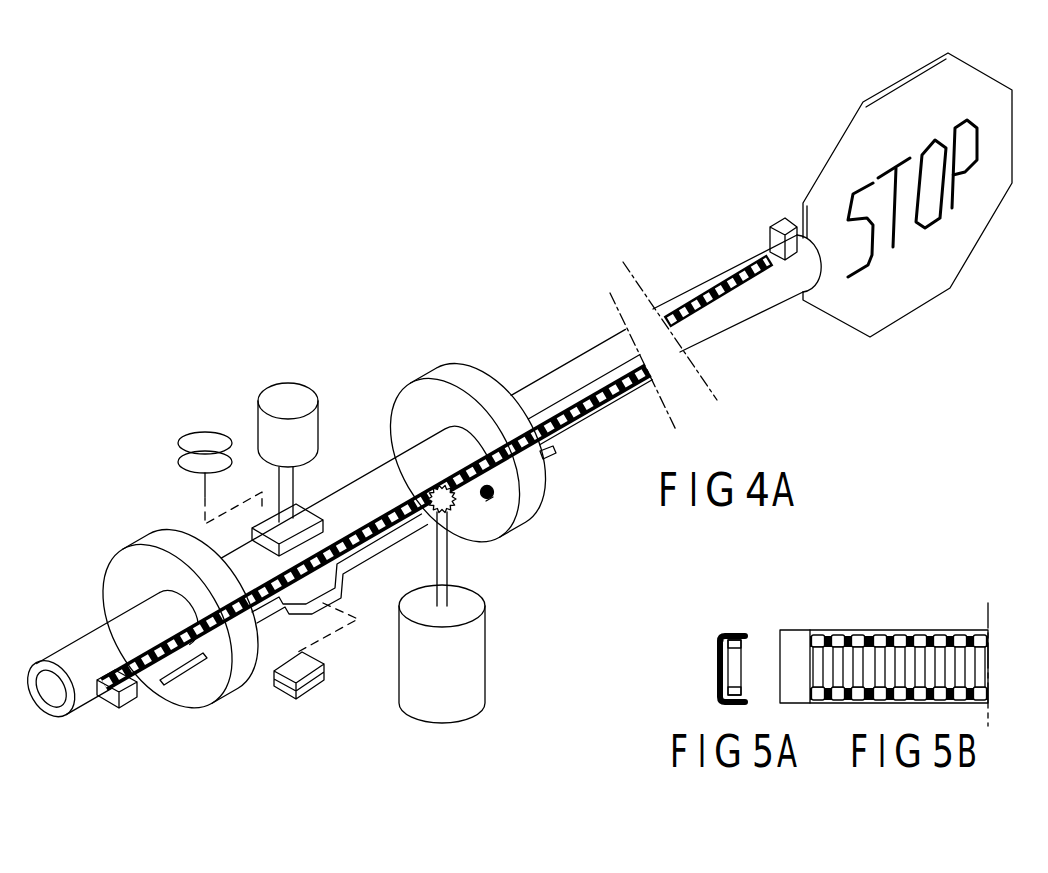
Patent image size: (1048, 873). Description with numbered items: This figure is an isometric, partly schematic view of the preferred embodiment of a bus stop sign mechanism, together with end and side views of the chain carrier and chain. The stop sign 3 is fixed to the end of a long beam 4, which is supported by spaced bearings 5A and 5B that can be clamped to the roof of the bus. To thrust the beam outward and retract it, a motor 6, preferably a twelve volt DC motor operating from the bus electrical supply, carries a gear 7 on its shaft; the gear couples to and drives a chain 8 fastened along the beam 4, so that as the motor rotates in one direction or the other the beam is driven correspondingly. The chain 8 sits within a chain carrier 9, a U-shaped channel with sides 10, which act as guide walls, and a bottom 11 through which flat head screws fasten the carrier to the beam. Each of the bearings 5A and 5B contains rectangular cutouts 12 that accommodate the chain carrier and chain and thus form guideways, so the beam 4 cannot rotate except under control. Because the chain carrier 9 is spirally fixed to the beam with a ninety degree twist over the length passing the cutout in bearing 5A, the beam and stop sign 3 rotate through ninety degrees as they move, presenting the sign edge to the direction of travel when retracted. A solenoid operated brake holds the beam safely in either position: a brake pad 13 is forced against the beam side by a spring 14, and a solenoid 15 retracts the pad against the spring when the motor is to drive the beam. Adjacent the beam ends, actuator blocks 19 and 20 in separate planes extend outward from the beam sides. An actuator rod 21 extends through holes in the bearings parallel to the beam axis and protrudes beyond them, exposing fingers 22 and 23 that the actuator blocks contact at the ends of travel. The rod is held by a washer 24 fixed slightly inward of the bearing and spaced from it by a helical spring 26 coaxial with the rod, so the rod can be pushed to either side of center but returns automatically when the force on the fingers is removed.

In FIG. 4A, the stop sign 3 is at (850, 120).
In FIG. 4A, the beam 4 is at (715, 276).
In FIG. 4A, the bearing 5A is at (432, 373).
In FIG. 4A, the bearing 5B is at (143, 543).
In FIG. 4A, the motor 6 is at (445, 727).
In FIG. 4A, the gear 7 is at (480, 538).
In FIG. 4A, the chain 8 is at (392, 507).
In FIG. 5A, the chain 8 is at (737, 640).
In FIG. 5B, the chain 8 is at (883, 663).
In FIG. 4A, the chain carrier 9 is at (616, 368).
In FIG. 5A, the chain carrier 9 is at (720, 637).
In FIG. 5B, the chain carrier 9 is at (850, 632).
In FIG. 5A, the sides 10 is at (735, 633).
In FIG. 5A, the bottom 11 is at (720, 665).
In FIG. 4A, the rectangular cutouts 12 is at (303, 500).
In FIG. 4A, the brake pad 13 is at (280, 503).
In FIG. 4A, the spring 14 is at (183, 428).
In FIG. 4A, the solenoid 15 is at (278, 382).
In FIG. 4A, the actuator block 19 is at (780, 220).
In FIG. 4A, the actuator block 20 is at (123, 705).
In FIG. 4A, the actuator rod 21 is at (400, 557).
In FIG. 4A, the finger 22 is at (547, 458).
In FIG. 4A, the finger 23 is at (182, 673).
In FIG. 4A, the washer 24 is at (493, 497).
In FIG. 4A, the helical spring 26 is at (493, 489).